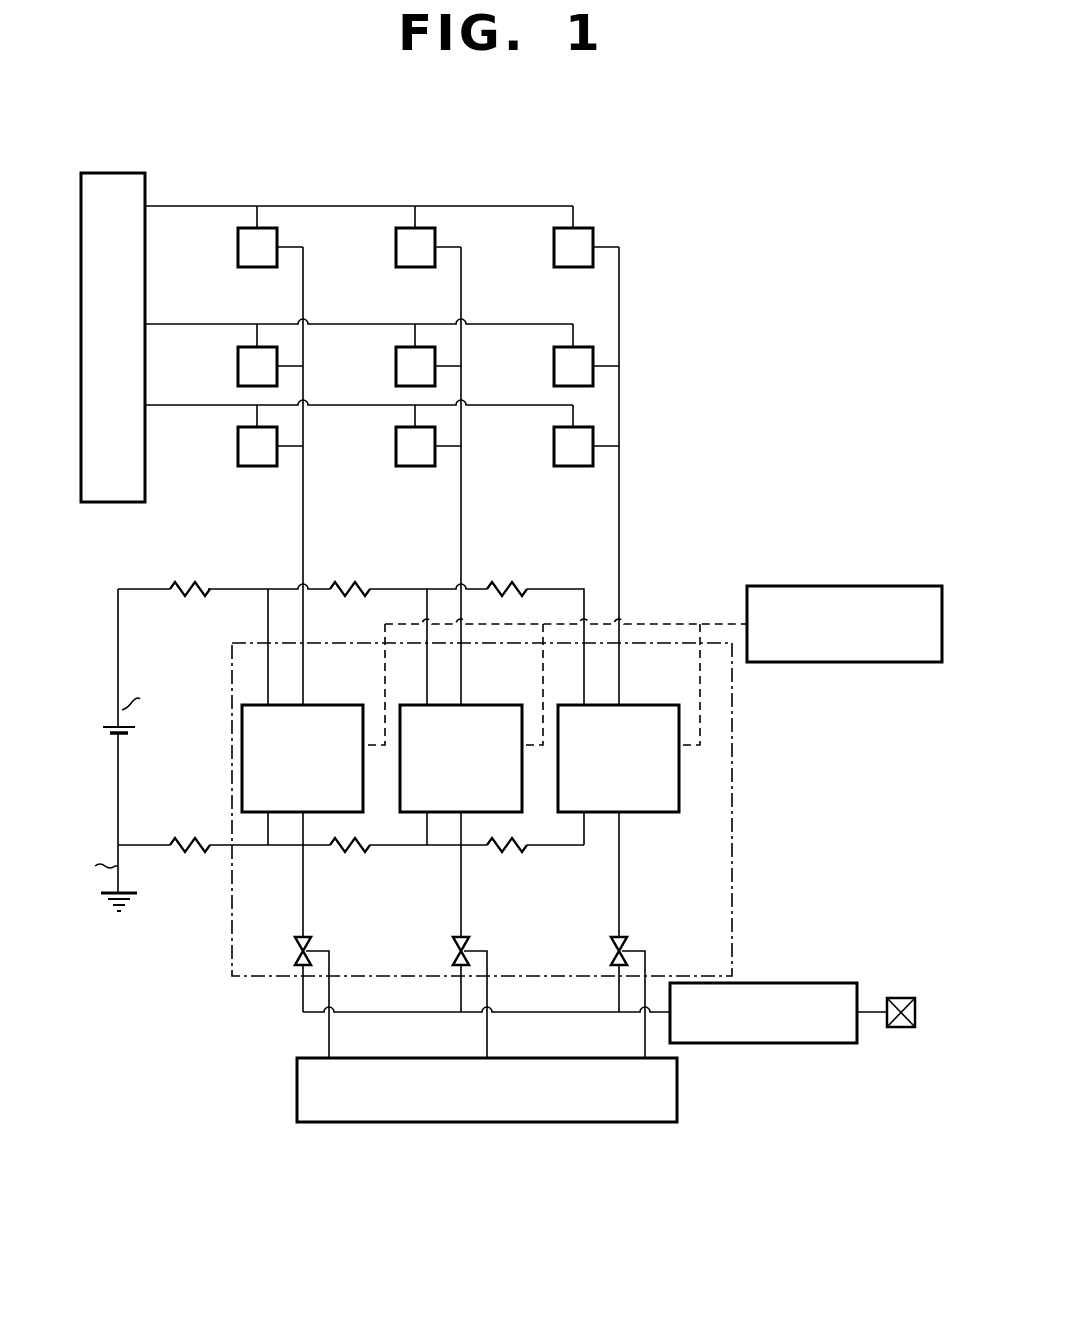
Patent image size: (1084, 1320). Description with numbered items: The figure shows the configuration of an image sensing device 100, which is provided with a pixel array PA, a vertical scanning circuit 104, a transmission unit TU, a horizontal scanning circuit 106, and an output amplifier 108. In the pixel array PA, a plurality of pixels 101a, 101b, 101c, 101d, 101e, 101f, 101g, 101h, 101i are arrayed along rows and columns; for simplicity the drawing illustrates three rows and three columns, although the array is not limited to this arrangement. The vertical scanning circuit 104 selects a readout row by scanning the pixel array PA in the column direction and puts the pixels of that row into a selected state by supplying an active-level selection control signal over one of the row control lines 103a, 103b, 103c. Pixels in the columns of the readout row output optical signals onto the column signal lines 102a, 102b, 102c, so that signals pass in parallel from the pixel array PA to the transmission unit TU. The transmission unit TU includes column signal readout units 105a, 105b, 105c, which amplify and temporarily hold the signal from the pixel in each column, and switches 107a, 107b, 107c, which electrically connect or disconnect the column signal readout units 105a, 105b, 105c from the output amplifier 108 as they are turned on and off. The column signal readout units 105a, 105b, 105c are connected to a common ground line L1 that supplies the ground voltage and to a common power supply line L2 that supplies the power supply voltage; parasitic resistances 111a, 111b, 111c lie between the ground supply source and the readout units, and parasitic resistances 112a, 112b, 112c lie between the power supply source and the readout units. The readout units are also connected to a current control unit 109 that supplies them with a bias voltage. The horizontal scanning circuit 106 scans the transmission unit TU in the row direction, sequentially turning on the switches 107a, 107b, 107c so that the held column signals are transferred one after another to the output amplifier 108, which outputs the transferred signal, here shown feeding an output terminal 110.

The image sensing device 100 is at (222, 1169).
The pixel 101a is at (238, 247).
The pixel 101b is at (396, 247).
The pixel 101c is at (554, 247).
The pixel 101d is at (238, 352).
The pixel 101e is at (396, 366).
The pixel 101f is at (554, 366).
The pixel 101g is at (256, 466).
The pixel 101h is at (396, 446).
The pixel 101i is at (554, 446).
The column signal line 102a is at (303, 526).
The column signal line 102b is at (461, 484).
The column signal line 102c is at (619, 484).
The row control line 103a is at (190, 206).
The row control line 103b is at (190, 324).
The row control line 103c is at (168, 405).
The vertical scanning circuit 104 is at (117, 173).
The column signal readout unit 105a is at (337, 705).
The column signal readout unit 105b is at (496, 705).
The column signal readout unit 105c is at (655, 705).
The horizontal scanning circuit 106 is at (297, 1090).
The switch 107a is at (309, 949).
The switch 107b is at (467, 949).
The switch 107c is at (625, 949).
The output amplifier 108 is at (832, 983).
The current control unit 109 is at (833, 586).
The output terminal 110 is at (905, 998).
The parasitic resistance 111a is at (189, 838).
The parasitic resistance 111b is at (347, 858).
The parasitic resistance 111c is at (505, 858).
The parasitic resistance 112a is at (186, 582).
The parasitic resistance 112b is at (345, 582).
The parasitic resistance 112c is at (510, 582).
The pixel array PA is at (659, 212).
The transmission unit TU is at (732, 760).
The ground line L1 is at (372, 852).
The power supply line L2 is at (379, 580).